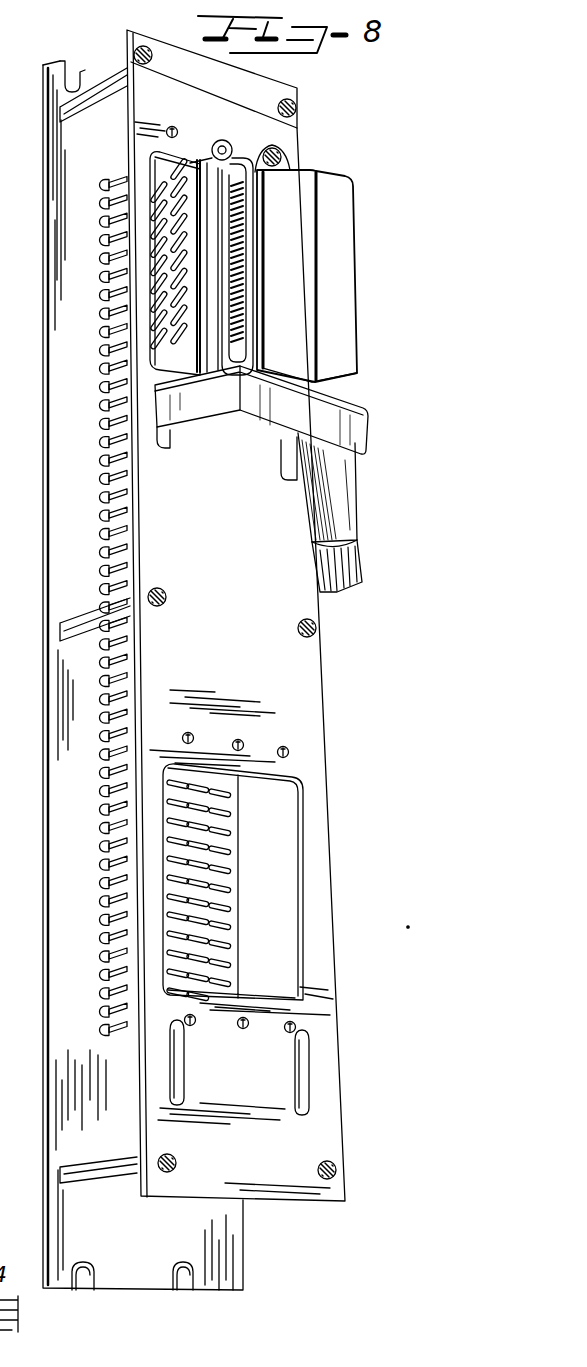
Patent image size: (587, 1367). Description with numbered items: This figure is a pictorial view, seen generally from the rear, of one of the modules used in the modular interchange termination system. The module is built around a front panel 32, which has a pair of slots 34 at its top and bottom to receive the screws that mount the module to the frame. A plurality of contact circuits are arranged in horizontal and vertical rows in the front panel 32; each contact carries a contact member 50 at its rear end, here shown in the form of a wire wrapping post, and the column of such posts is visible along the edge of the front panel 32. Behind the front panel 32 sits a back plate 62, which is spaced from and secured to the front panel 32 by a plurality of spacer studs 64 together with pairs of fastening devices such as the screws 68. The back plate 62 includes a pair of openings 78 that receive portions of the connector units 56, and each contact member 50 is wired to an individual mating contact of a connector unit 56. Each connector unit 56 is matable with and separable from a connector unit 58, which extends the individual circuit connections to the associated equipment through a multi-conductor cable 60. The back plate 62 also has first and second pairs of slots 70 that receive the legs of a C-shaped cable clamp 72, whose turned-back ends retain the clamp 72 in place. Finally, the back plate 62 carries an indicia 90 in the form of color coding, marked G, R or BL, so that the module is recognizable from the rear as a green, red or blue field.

The front panel 32 is at (55, 239).
The slots 34 is at (74, 88).
The contact member 50 is at (100, 320).
The connector unit 56 is at (194, 158).
The connector unit 58 is at (326, 186).
The multi-conductor cable 60 is at (300, 528).
The back plate 62 is at (308, 708).
The spacer studs 64 is at (107, 84).
The screws 68 is at (146, 48).
The slots 70 is at (297, 470).
The C-shaped cable clamp 72 is at (258, 417).
The openings 78 is at (163, 330).
The indicia 90 is at (160, 62).